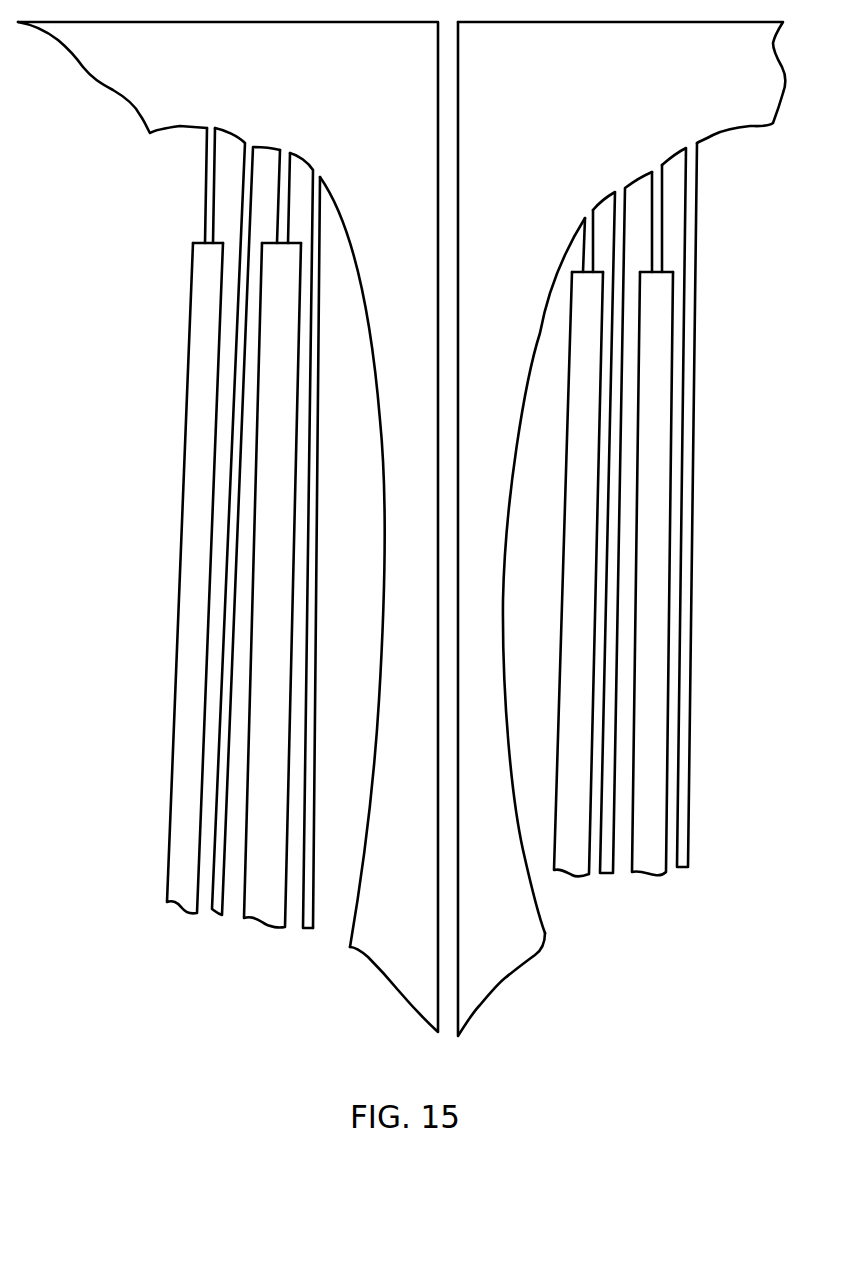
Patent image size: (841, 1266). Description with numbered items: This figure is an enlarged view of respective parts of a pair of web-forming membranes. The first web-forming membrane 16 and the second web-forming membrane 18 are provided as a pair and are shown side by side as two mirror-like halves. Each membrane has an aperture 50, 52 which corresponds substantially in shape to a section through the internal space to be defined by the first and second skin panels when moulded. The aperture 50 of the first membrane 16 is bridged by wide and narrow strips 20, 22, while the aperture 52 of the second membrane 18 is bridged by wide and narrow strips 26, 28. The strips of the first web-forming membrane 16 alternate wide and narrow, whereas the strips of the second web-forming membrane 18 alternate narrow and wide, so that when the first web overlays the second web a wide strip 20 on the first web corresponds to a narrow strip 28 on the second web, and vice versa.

The first web-forming membrane 16 is at (407, 982).
The second web-forming membrane 18 is at (498, 982).
The wide strip 20 is at (265, 907).
The narrow strip 22 is at (307, 928).
The wide strip 26 is at (573, 862).
The narrow strip 28 is at (608, 855).
The aperture 50 is at (343, 900).
The aperture 52 is at (537, 858).